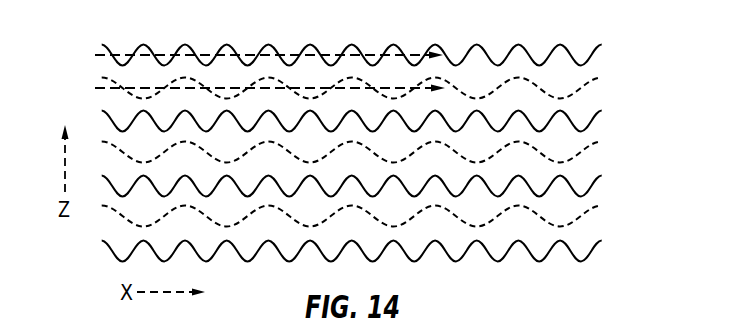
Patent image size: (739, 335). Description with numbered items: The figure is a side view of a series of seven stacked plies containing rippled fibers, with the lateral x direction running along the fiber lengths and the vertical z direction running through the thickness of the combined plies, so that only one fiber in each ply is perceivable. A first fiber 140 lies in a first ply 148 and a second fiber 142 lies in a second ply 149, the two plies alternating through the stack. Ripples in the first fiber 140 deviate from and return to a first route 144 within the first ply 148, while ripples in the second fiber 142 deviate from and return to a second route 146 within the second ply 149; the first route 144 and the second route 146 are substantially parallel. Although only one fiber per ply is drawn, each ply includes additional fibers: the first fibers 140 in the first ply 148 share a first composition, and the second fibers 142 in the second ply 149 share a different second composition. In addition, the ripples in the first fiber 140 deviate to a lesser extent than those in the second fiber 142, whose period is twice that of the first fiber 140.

The first fiber 140 is at (560, 43).
The second fiber 142 is at (572, 97).
The first route 144 is at (122, 52).
The second route 146 is at (135, 84).
The first ply 148 is at (604, 55).
The second ply 149 is at (594, 91).